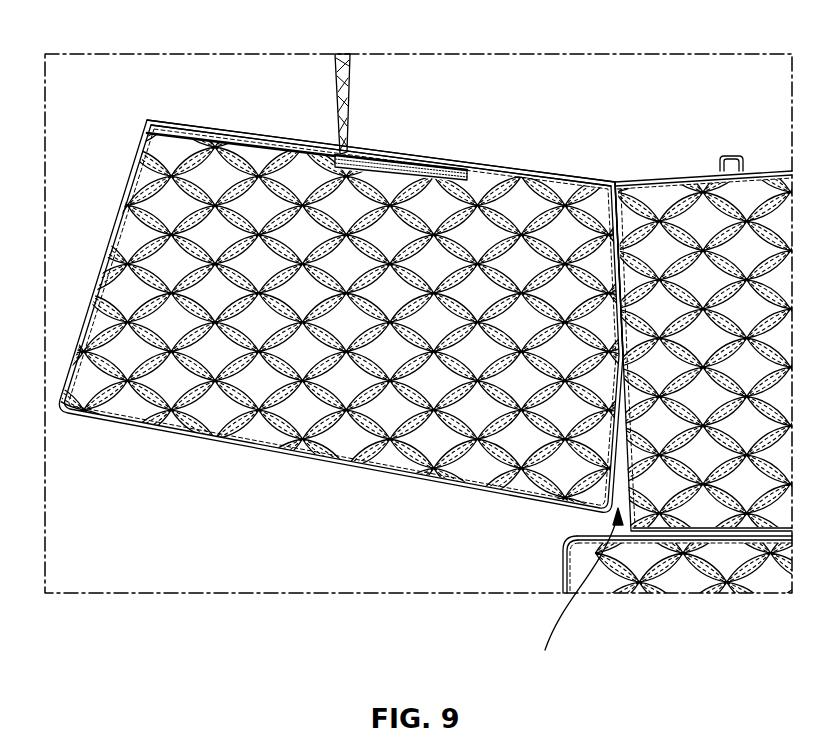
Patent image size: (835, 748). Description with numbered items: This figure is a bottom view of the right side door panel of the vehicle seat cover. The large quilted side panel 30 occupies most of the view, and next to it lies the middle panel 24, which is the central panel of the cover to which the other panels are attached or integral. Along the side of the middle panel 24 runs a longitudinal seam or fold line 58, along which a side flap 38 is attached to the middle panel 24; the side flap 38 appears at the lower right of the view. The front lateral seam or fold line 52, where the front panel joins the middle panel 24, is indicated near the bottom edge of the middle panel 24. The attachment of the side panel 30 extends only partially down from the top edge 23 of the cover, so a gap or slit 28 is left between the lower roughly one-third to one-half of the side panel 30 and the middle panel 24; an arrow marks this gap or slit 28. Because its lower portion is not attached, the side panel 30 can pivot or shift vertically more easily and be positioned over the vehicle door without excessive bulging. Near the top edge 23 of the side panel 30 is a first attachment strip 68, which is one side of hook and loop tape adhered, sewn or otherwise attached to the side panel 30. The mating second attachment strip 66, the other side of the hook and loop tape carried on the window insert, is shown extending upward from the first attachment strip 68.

The top edge 23 is at (552, 170).
The middle panel 24 is at (706, 216).
The gap or slit 28 is at (579, 595).
The side panel 30 is at (125, 240).
The side flap 38 is at (612, 580).
The front lateral seam or fold line 52 is at (718, 537).
The longitudinal seam or fold line 58 is at (616, 196).
The second attachment strip 66 is at (337, 90).
The first attachment strip 68 is at (443, 163).